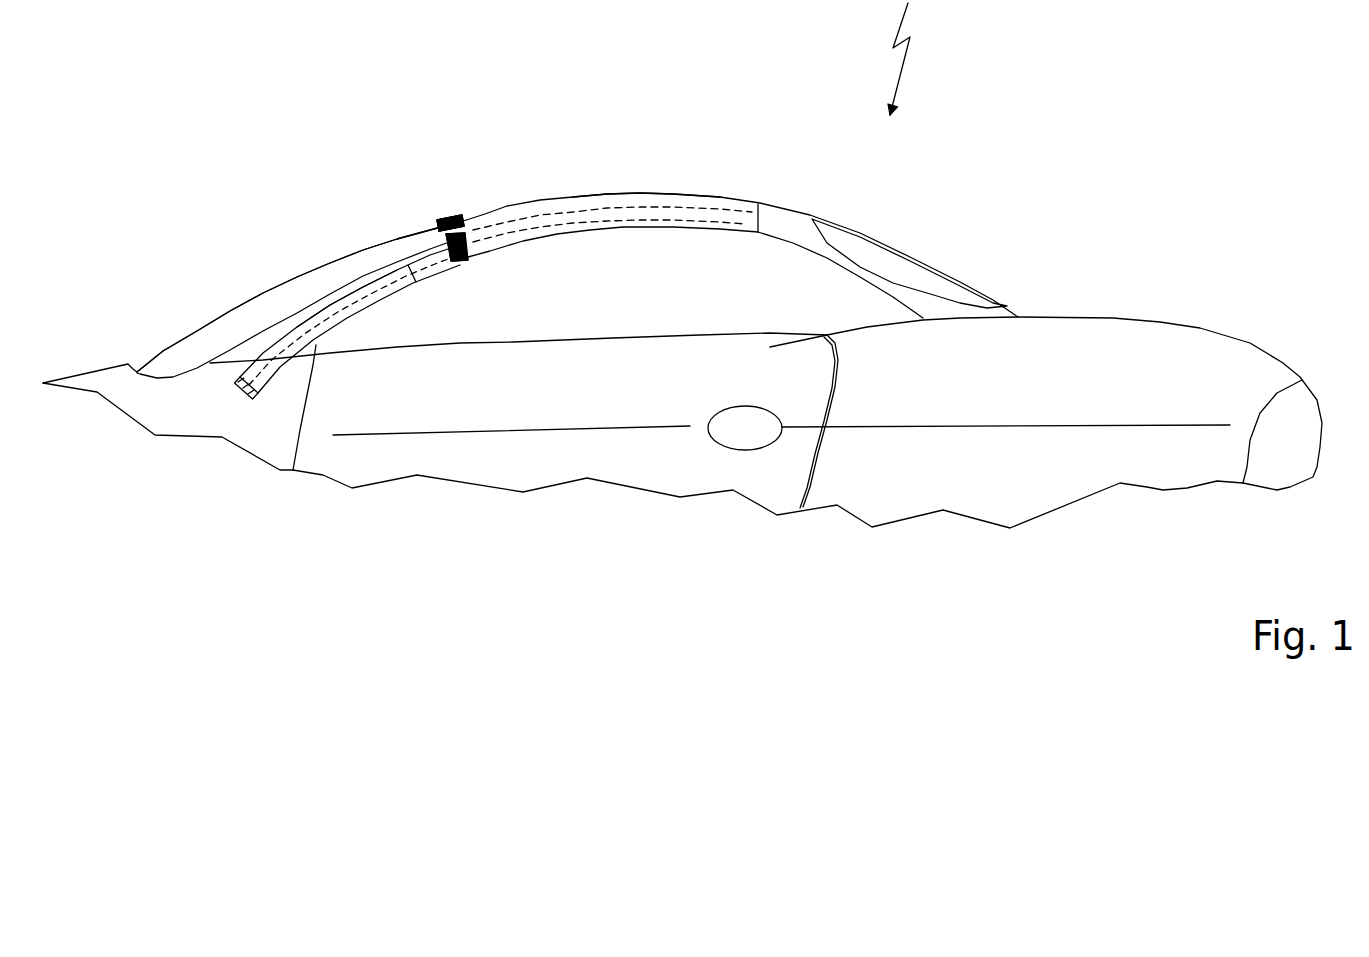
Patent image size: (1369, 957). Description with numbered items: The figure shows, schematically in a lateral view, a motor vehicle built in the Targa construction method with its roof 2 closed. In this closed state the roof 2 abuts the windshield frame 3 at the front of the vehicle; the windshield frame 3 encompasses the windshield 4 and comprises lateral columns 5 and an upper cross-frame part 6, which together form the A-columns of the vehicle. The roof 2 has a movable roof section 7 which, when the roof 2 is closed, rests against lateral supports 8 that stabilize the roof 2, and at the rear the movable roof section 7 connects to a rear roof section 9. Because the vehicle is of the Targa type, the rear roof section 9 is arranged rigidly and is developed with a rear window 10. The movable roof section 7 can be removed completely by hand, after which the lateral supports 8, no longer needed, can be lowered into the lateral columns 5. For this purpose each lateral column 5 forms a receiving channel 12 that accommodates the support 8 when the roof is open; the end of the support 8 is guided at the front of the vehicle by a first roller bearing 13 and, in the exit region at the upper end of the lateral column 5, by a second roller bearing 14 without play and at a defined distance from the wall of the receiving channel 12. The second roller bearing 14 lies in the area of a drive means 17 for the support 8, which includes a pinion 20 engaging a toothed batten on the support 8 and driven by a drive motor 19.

The roof 2 is at (577, 200).
The windshield frame 3 is at (397, 130).
The windshield 4 is at (298, 228).
The lateral column 5 is at (370, 305).
The upper cross-frame part 6 is at (457, 154).
The movable roof section 7 is at (646, 112).
The lateral support 8 is at (613, 142).
The rear roof section 9 is at (840, 173).
The rear window 10 is at (909, 168).
The receiving channel 12 is at (350, 235).
The first roller bearing 13 is at (229, 238).
The second roller bearing 14 is at (415, 169).
The drive means 17 is at (517, 170).
The drive motor 19 is at (438, 129).
The pinion 20 is at (489, 138).